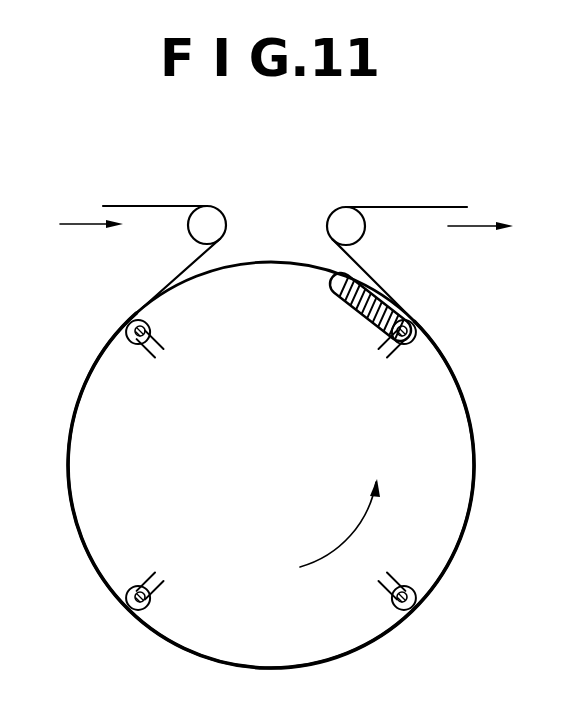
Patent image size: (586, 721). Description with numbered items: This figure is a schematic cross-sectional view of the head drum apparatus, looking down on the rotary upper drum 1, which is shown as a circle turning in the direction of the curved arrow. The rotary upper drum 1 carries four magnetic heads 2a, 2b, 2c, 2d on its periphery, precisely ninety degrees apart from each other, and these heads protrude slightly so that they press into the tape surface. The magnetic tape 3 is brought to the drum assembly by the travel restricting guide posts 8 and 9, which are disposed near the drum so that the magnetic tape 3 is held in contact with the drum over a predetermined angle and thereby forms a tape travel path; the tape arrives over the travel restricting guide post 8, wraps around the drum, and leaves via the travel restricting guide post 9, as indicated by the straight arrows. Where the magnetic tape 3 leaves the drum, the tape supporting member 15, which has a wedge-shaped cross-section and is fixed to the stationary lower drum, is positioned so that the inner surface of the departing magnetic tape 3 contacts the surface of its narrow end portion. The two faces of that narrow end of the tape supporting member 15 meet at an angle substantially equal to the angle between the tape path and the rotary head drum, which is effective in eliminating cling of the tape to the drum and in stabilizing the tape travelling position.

The rotary upper drum 1 is at (440, 504).
The magnetic head 2a is at (388, 608).
The magnetic head 2b is at (410, 351).
The magnetic head 2c is at (130, 350).
The magnetic head 2d is at (158, 615).
The magnetic tape 3 is at (428, 206).
The travel restricting guide post 8 is at (219, 221).
The travel restricting guide post 9 is at (343, 222).
The tape supporting member 15 is at (382, 295).